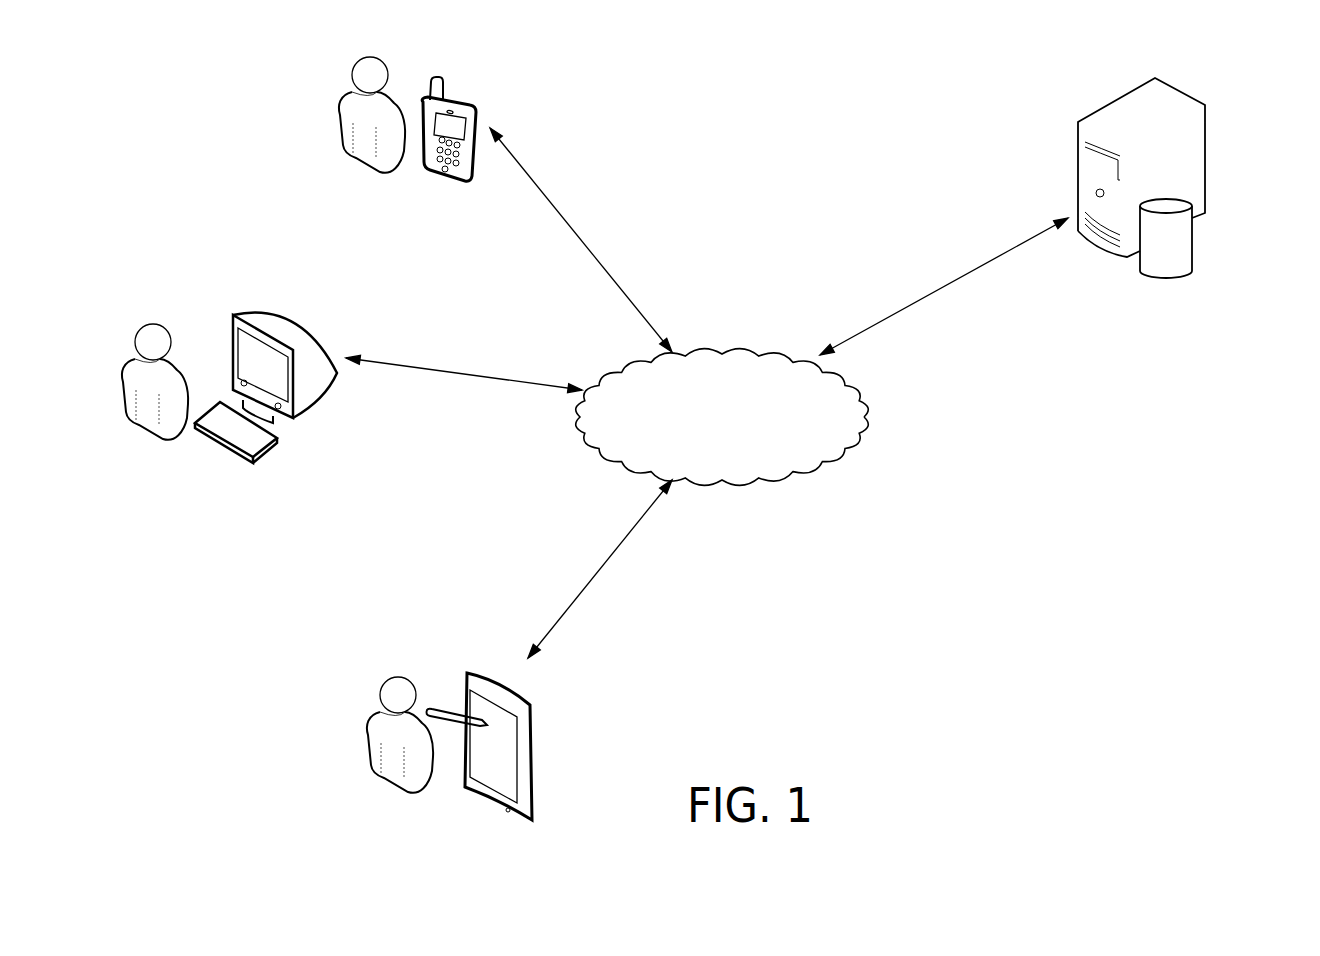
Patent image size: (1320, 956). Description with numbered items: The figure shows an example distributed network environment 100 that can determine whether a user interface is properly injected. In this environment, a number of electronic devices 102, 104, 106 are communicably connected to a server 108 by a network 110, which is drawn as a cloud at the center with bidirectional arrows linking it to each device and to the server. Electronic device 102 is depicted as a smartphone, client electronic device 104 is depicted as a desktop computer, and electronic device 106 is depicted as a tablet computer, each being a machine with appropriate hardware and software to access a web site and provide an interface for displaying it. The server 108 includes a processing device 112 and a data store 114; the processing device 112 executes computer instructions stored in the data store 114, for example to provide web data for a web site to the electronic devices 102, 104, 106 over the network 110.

The network environment 100 is at (846, 91).
The electronic device 102 is at (467, 103).
The client electronic device 104 is at (310, 330).
The electronic device 106 is at (527, 705).
The server 108 is at (1079, 302).
The network 110 is at (720, 347).
The processing device 112 is at (1183, 90).
The data store 114 is at (1192, 270).